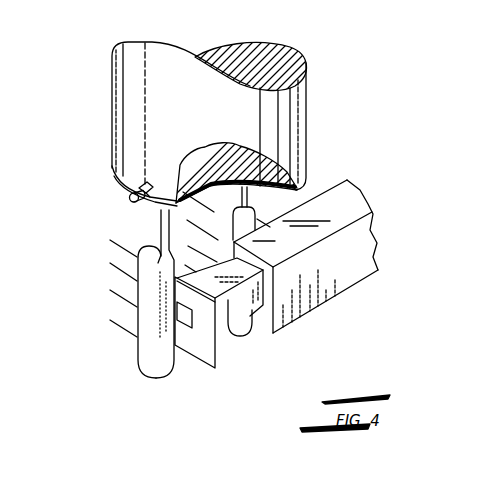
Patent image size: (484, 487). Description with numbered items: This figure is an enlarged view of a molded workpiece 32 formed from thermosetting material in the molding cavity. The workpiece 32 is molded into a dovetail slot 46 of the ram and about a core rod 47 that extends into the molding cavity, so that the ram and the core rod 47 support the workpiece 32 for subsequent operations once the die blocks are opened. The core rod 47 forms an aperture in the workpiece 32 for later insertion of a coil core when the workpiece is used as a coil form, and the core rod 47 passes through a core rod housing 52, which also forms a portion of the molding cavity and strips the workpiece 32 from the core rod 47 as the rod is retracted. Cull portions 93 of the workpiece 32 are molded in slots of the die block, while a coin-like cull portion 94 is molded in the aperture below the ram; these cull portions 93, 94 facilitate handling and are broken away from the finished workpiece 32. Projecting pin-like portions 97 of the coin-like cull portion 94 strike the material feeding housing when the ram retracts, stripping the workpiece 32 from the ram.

The workpiece 32 is at (138, 356).
The dovetail slot 46 is at (149, 183).
The core rod 47 is at (186, 332).
The core rod housing 52 is at (348, 288).
The cull portions 93 is at (160, 222).
The coin-like cull portion 94 is at (116, 180).
The projecting pin-like portions 97 is at (130, 200).